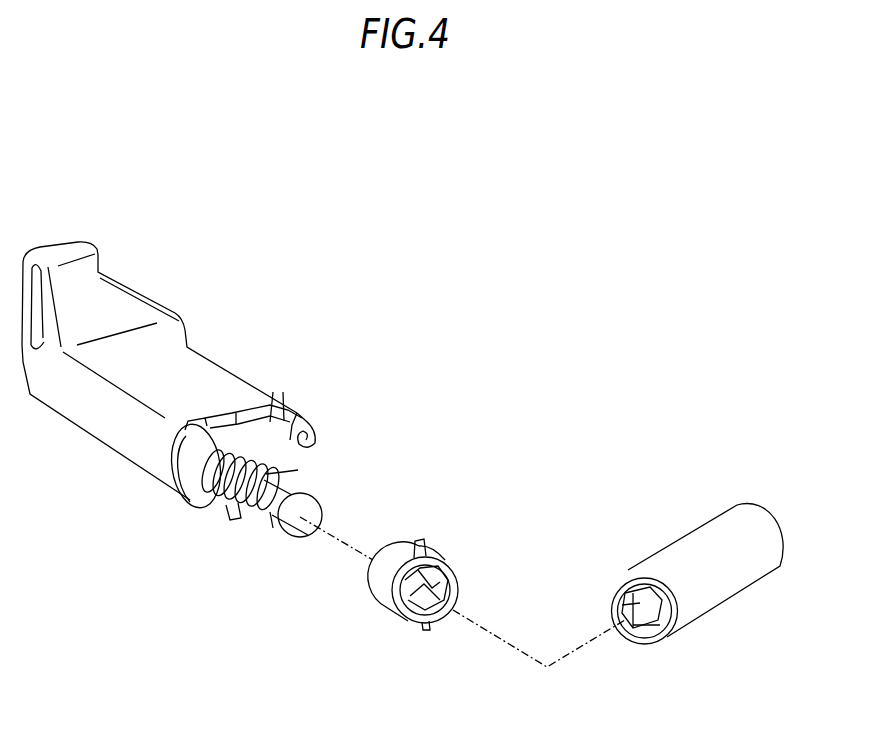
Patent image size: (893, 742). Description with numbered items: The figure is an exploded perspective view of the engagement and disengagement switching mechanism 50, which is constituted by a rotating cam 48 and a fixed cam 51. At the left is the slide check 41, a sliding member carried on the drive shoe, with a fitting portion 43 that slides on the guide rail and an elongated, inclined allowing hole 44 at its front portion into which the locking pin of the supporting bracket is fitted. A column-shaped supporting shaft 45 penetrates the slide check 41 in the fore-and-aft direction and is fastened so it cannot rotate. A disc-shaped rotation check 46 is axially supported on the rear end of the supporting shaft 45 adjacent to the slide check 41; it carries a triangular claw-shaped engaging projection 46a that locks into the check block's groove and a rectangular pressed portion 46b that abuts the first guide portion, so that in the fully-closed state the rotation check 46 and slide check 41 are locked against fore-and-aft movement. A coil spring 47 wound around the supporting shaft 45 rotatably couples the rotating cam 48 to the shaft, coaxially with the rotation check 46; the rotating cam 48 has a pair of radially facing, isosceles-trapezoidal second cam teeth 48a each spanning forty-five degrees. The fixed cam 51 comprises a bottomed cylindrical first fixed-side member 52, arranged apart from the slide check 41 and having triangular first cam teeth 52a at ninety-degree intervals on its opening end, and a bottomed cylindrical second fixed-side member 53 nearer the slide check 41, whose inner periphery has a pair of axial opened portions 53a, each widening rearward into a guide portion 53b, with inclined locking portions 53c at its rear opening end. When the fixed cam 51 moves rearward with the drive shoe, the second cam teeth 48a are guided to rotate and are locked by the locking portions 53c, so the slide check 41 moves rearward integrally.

The slide check 41 is at (205, 363).
The fitting portion 43 is at (301, 419).
The allowing hole 44 is at (48, 325).
The supporting shaft 45 is at (298, 513).
The rotation check 46 is at (197, 488).
The engaging projection 46a is at (273, 417).
The pressed portion 46b is at (235, 520).
The coil spring 47 is at (205, 432).
The rotating cam 48 is at (290, 460).
The second cam teeth 48a is at (283, 478).
The engagement and disengagement switching mechanism 50 is at (468, 392).
The fixed cam 51 is at (598, 538).
The first fixed-side member 52 is at (653, 566).
The first cam teeth 52a is at (613, 603).
The second fixed-side member 53 is at (425, 552).
The opened portions 53a is at (418, 546).
The guide portion 53b is at (452, 595).
The locking portions 53c is at (450, 580).